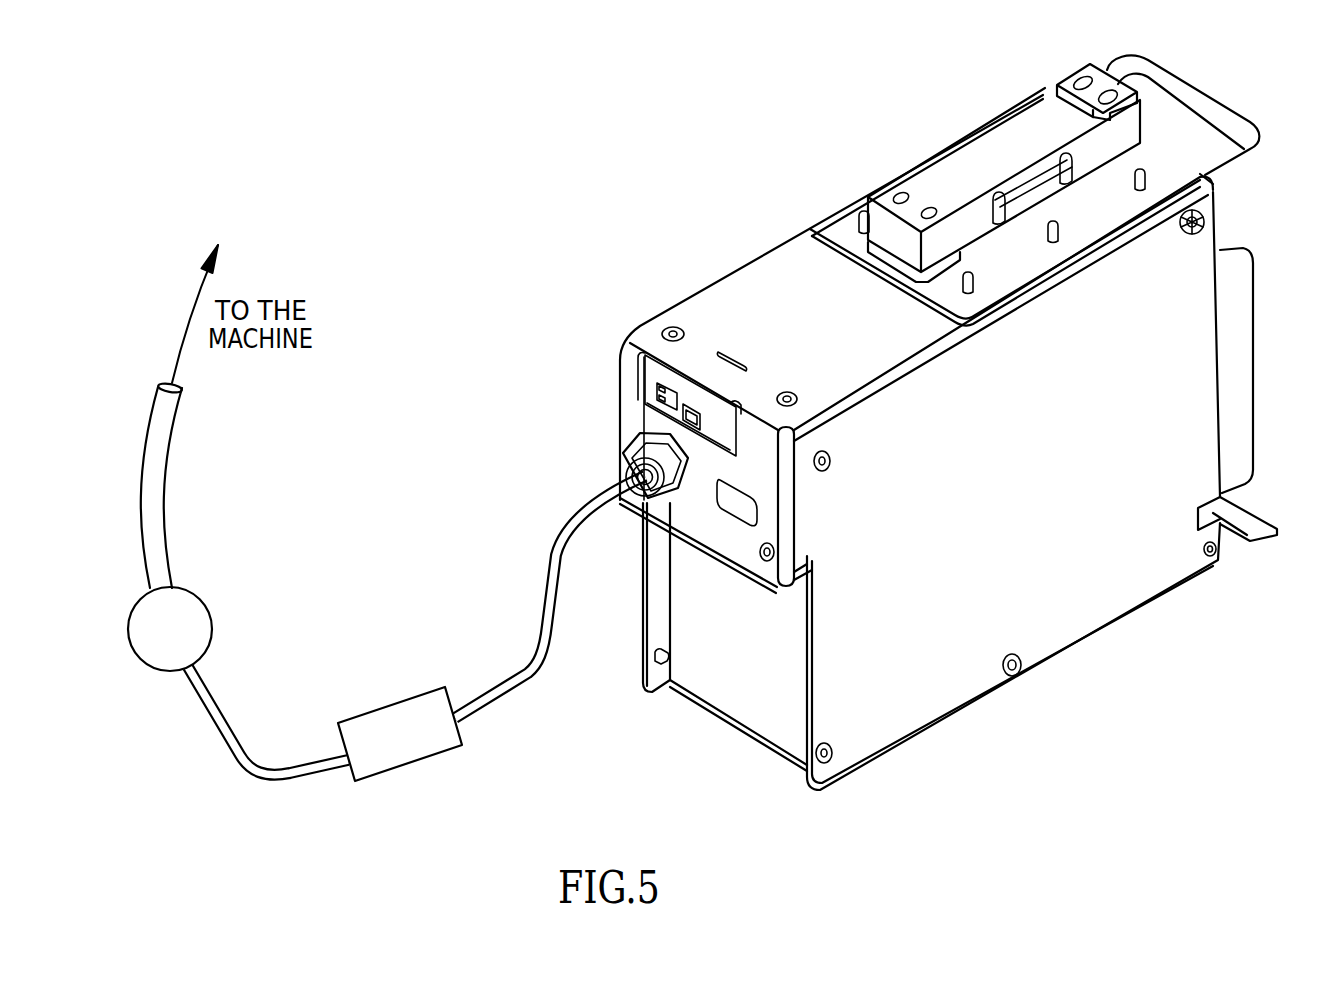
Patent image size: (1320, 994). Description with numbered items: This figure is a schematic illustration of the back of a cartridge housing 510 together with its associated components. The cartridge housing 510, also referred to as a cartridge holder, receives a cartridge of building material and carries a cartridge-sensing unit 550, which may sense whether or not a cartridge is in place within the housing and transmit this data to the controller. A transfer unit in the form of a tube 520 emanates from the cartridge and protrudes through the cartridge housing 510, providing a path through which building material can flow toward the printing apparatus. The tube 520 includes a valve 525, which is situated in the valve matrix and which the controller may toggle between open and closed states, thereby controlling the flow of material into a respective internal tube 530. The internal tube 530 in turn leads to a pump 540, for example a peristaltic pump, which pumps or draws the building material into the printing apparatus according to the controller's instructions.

The cartridge housing 510 is at (907, 152).
The tube 520 is at (543, 652).
The valve 525 is at (386, 705).
The internal tube 530 is at (253, 763).
The pump 540 is at (188, 587).
The cartridge-sensing unit 550 is at (647, 397).